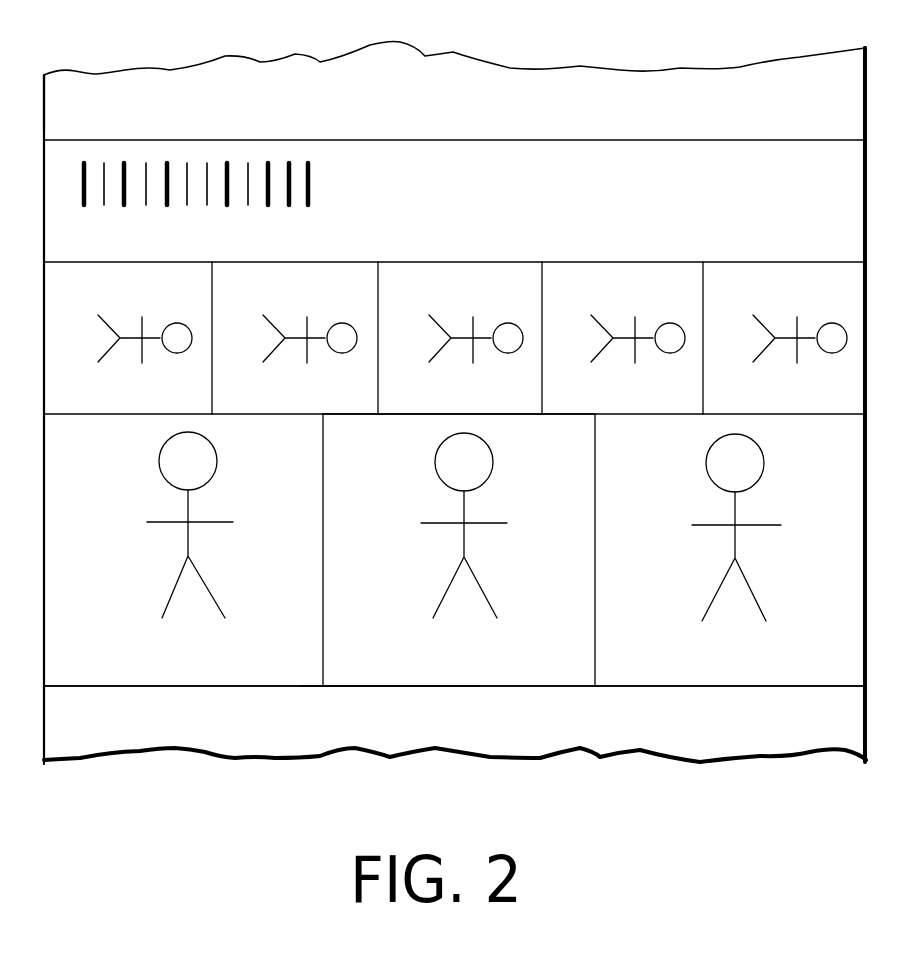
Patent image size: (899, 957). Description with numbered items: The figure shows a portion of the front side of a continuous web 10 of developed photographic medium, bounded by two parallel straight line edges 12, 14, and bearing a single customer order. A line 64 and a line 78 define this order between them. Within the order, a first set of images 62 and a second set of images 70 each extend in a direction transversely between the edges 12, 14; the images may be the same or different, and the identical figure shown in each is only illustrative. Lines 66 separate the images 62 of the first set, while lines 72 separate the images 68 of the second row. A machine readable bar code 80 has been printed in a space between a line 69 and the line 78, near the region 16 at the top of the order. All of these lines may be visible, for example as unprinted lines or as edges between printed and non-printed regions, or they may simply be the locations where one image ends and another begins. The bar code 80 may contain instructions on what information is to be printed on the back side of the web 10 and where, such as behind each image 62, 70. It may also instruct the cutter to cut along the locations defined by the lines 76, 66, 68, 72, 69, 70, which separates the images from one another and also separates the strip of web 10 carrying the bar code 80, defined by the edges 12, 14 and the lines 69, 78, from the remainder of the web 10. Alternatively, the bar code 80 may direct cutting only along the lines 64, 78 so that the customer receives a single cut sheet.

The continuous web 10 is at (26, 722).
The straight line edge 12 is at (44, 100).
The straight line edge 14 is at (867, 80).
The header region 16 is at (738, 122).
The first set of images 62 is at (271, 660).
The line 64 is at (135, 687).
The lines 66 is at (323, 543).
The images 68 is at (414, 418).
The line 69 is at (466, 262).
The second set of images 70 is at (121, 268).
The lines 72 is at (212, 365).
The line 76 is at (388, 688).
The line 78 is at (430, 140).
The machine readable bar code 80 is at (316, 182).